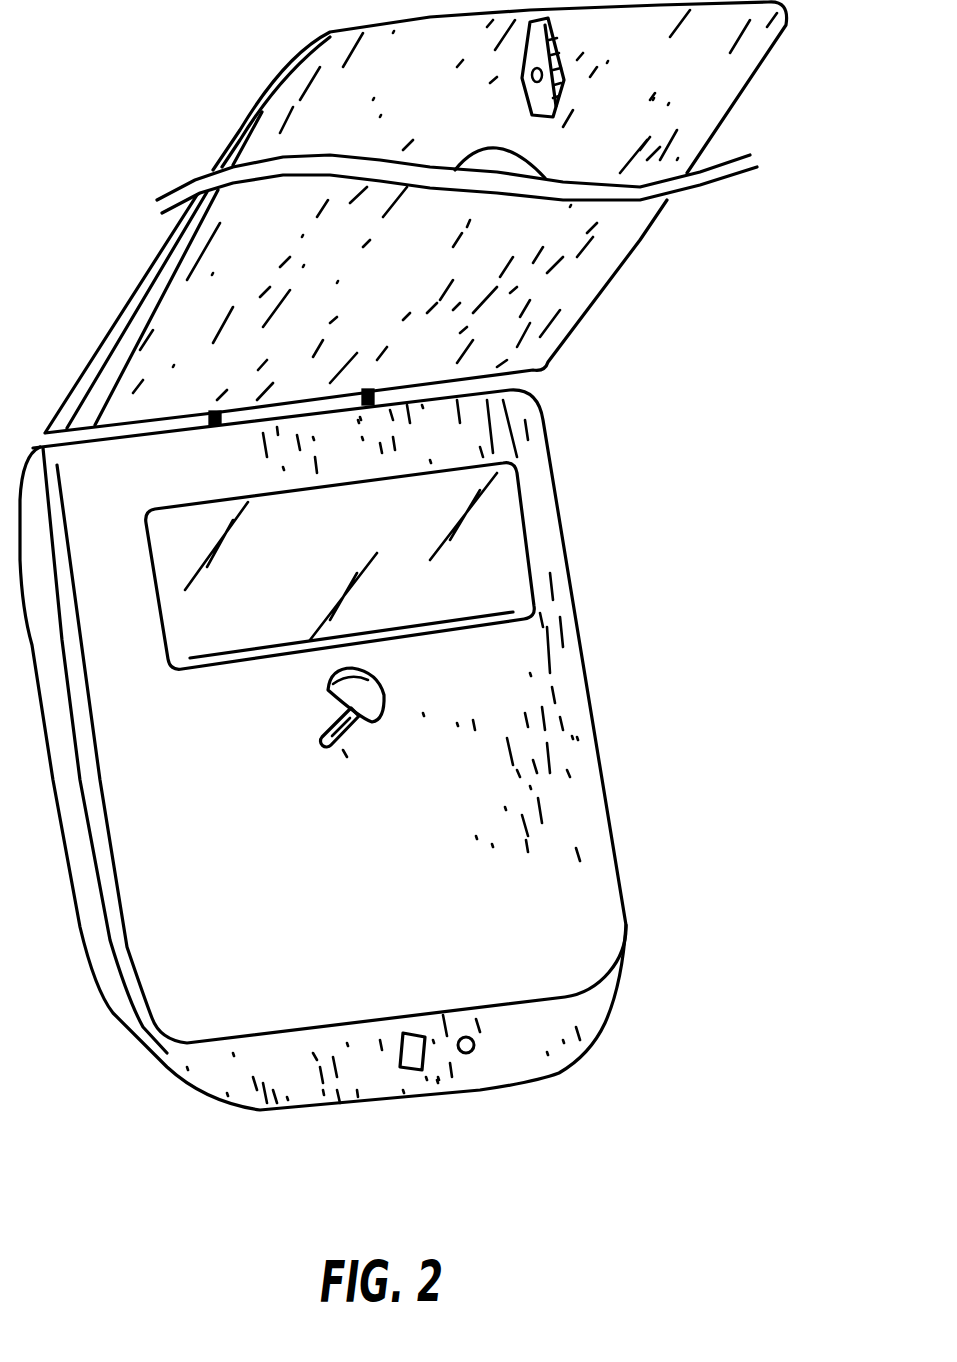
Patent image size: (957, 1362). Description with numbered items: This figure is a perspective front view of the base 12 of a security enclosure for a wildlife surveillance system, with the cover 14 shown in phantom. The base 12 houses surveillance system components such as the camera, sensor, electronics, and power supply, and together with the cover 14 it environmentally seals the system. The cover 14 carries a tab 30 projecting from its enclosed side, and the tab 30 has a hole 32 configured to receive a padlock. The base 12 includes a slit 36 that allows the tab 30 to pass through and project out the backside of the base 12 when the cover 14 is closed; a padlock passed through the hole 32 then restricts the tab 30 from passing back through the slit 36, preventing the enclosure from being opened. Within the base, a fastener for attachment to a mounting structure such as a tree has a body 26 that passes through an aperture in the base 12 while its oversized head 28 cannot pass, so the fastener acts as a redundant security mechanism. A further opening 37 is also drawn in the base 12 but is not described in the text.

The base 12 is at (613, 807).
The cover 14 is at (613, 277).
The body 26 is at (357, 730).
The oversized head 28 is at (388, 690).
The tab 30 is at (560, 56).
The hole 32 is at (523, 83).
The slit 36 is at (418, 1075).
The jack opening 37 is at (467, 1053).